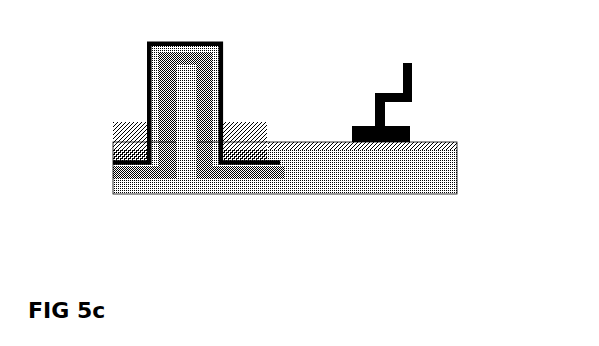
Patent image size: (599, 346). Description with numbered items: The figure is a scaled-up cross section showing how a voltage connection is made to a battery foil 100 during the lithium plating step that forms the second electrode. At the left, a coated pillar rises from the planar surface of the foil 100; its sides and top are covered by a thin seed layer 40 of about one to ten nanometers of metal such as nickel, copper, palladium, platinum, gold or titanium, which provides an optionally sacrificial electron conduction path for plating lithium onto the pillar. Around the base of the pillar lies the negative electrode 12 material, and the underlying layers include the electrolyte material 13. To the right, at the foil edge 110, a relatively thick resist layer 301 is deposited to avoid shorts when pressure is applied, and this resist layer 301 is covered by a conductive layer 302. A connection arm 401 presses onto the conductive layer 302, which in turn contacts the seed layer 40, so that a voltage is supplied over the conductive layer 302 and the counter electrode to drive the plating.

The negative electrode 12 is at (122, 131).
The electrolyte material 13 is at (467, 157).
The seed layer 40 is at (233, 83).
The battery foil 100 is at (207, 207).
The foil edge 110 is at (414, 175).
The resist layer 301 is at (467, 171).
The conductive layer 302 is at (523, 134).
The connection arm 401 is at (382, 94).